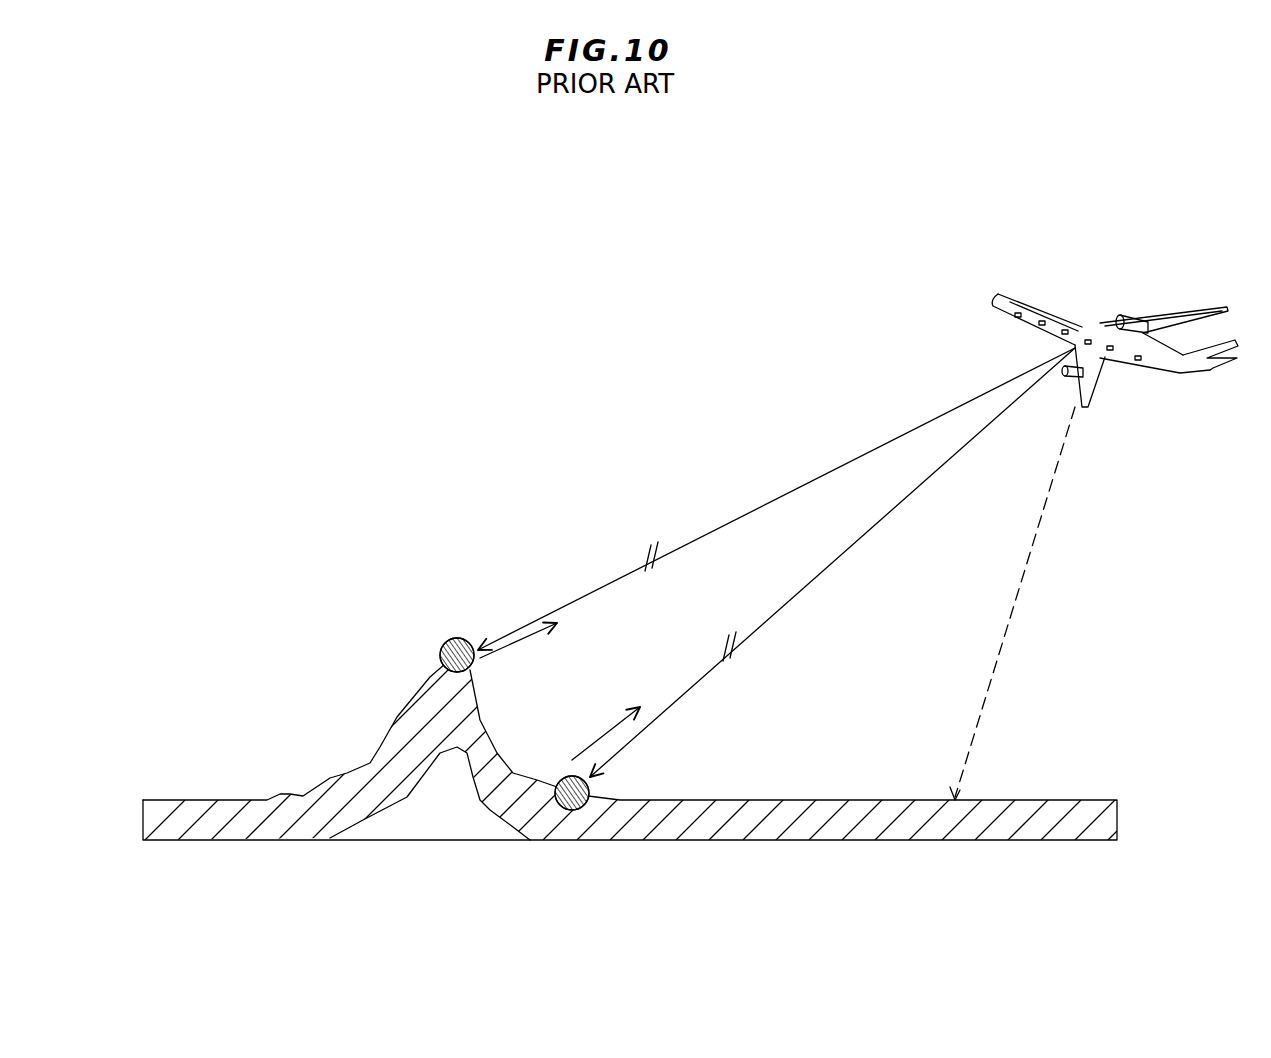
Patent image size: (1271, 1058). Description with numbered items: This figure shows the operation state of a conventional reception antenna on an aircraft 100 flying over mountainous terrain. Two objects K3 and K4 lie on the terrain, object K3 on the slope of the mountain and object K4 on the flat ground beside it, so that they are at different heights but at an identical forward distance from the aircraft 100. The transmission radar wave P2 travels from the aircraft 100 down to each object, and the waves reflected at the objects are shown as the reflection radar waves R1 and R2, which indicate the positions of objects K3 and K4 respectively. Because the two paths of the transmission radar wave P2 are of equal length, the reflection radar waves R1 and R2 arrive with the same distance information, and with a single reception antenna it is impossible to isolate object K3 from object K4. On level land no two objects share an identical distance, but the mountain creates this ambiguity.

The aircraft 100 is at (1115, 290).
The object K3 is at (406, 623).
The object K4 is at (600, 862).
The transmission radar wave P2 is at (765, 562).
The reflection radar wave R1 is at (518, 672).
The reflection radar wave R2 is at (606, 711).